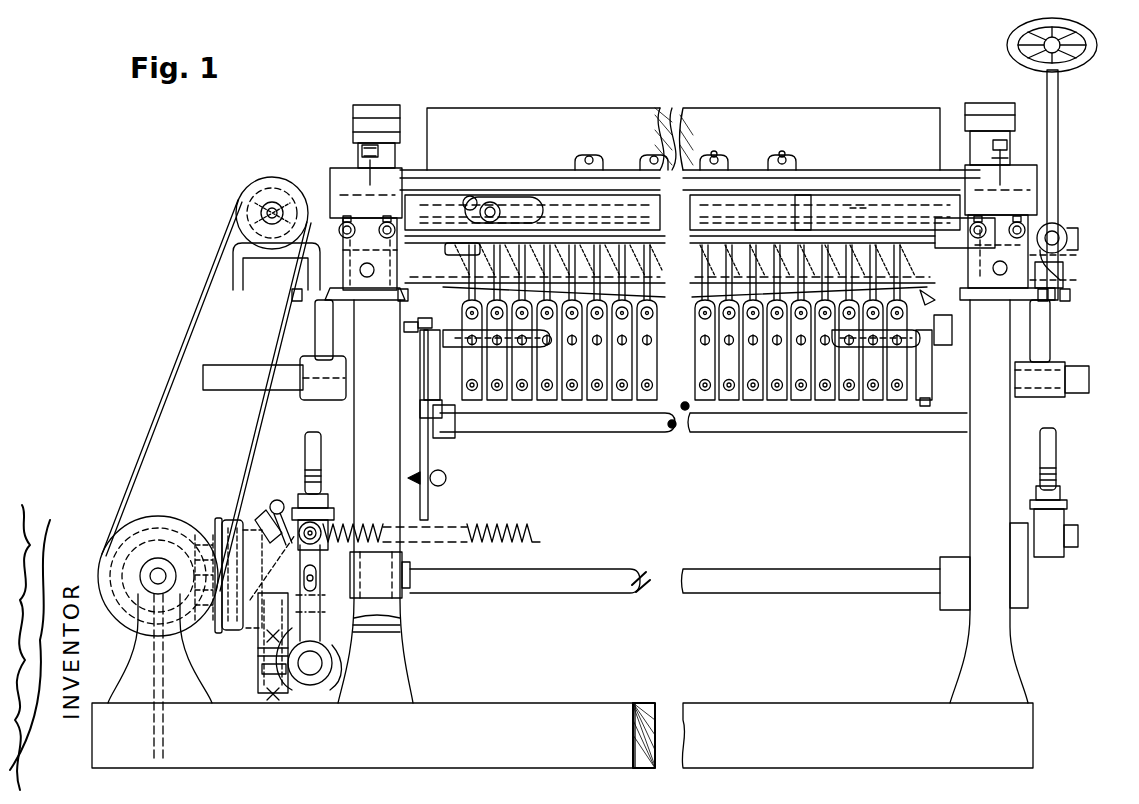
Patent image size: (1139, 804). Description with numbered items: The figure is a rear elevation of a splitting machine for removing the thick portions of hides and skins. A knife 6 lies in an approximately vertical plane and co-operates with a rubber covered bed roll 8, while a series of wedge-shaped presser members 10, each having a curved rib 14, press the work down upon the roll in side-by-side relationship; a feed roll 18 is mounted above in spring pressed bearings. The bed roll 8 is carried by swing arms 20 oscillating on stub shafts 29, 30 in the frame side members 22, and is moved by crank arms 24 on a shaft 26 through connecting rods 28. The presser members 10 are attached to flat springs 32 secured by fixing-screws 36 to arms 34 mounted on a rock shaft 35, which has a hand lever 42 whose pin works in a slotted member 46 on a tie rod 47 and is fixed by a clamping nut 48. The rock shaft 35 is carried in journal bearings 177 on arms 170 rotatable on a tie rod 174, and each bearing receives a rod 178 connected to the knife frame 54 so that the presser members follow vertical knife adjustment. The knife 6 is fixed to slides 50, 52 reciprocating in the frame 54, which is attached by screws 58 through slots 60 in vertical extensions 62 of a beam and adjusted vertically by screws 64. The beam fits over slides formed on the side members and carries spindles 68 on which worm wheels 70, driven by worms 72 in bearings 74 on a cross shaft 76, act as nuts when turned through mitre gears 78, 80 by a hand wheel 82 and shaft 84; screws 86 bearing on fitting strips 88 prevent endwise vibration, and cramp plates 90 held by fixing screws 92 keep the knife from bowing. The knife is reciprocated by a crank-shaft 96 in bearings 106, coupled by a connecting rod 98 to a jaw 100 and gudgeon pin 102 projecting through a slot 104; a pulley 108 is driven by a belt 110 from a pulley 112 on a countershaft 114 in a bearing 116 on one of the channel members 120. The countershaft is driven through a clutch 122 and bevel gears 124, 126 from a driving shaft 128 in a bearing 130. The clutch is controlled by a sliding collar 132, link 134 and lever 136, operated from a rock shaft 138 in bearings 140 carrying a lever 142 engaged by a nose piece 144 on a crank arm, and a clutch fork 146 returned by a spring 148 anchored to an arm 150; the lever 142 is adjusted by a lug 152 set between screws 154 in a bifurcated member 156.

The knife 6 is at (458, 232).
The bed roll 8 is at (932, 295).
The presser members 10 is at (750, 246).
The rib 14 is at (612, 246).
The feed roll 18 is at (800, 120).
The swing arms 20 is at (320, 330).
The side members 22 is at (388, 675).
The crank arms 24 is at (328, 515).
The shaft 26 is at (798, 580).
The connecting rods 28 is at (320, 448).
The stub shaft 29 is at (1078, 380).
The stub shaft 30 is at (238, 378).
The flat springs 32 is at (825, 402).
The arms 34 is at (737, 402).
The rock shaft 35 is at (686, 392).
The fixing-screws 36 is at (858, 402).
The hand lever 42 is at (430, 516).
The slotted member 46 is at (446, 492).
The tie rod 47 is at (588, 426).
The clamping nut 48 is at (412, 476).
The slide 50 is at (556, 190).
The slide 52 is at (815, 192).
The frame 54 is at (870, 182).
The screws 58 is at (387, 222).
The slots 60 is at (345, 220).
The vertical extensions 62 is at (352, 192).
The screws 64 is at (368, 152).
The screw threaded spindles 68 is at (1000, 272).
The worm wheels 70 is at (1069, 279).
The worms 72 is at (1060, 258).
The bearings 74 is at (985, 272).
The cross shaft 76 is at (425, 250).
The mitre gear 78 is at (1060, 250).
The mitre gear 80 is at (1062, 230).
The hand wheel 82 is at (1088, 45).
The shaft 84 is at (1058, 100).
The screws 86 is at (292, 296).
The fitting strips 88 is at (372, 300).
The cramp plates 90 is at (592, 162).
The fixing screws 92 is at (782, 154).
The crank-shaft 96 is at (262, 223).
The connecting rod 98 is at (312, 205).
The jaw 100 is at (506, 206).
The gudgeon pin 102 is at (487, 202).
The slot 104 is at (465, 198).
The bearings 106 is at (248, 205).
The pulley 108 is at (240, 216).
The belt 110 is at (200, 303).
The pulley 112 is at (156, 540).
The countershaft 114 is at (153, 573).
The bearing 116 is at (146, 653).
The channel members 120 is at (545, 716).
The clutch 122 is at (222, 523).
The bevel gear 124 is at (206, 535).
The bevel gear 126 is at (128, 540).
The driving shaft 128 is at (376, 575).
The bearing 130 is at (380, 590).
The sliding collar 132 is at (310, 593).
The link 134 is at (300, 526).
The lever 136 is at (275, 500).
The rock shaft 138 is at (310, 686).
The bearings 140 is at (325, 690).
The lever 142 is at (258, 660).
The nose piece 144 is at (265, 515).
The clutch fork 146 is at (360, 620).
The spring 148 is at (412, 547).
The arm 150 is at (535, 532).
The lug 152 is at (266, 676).
The screws 154 is at (272, 730).
The bifurcated member 156 is at (262, 650).
The arms 170 is at (408, 327).
The tie rod 174 is at (528, 347).
The journal bearings 177 is at (450, 380).
The rod 178 is at (428, 318).